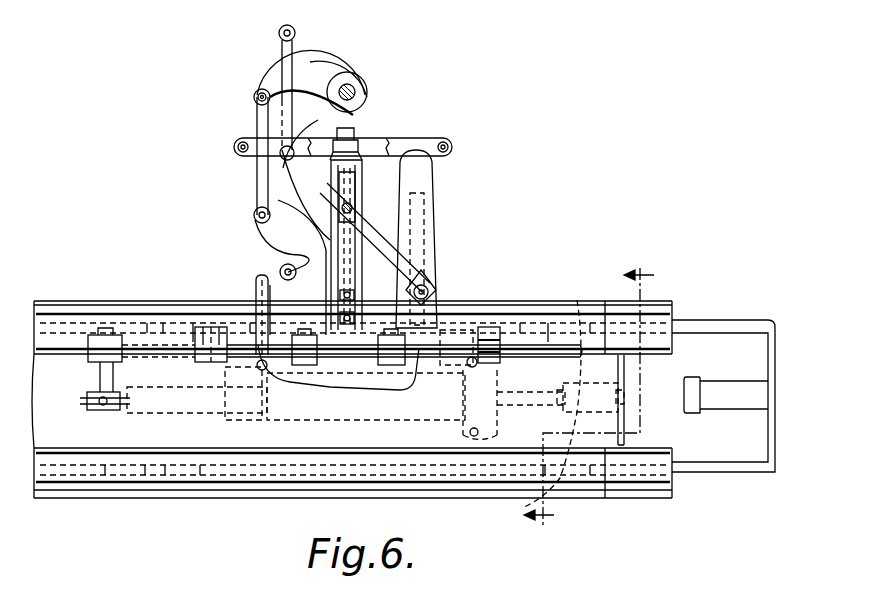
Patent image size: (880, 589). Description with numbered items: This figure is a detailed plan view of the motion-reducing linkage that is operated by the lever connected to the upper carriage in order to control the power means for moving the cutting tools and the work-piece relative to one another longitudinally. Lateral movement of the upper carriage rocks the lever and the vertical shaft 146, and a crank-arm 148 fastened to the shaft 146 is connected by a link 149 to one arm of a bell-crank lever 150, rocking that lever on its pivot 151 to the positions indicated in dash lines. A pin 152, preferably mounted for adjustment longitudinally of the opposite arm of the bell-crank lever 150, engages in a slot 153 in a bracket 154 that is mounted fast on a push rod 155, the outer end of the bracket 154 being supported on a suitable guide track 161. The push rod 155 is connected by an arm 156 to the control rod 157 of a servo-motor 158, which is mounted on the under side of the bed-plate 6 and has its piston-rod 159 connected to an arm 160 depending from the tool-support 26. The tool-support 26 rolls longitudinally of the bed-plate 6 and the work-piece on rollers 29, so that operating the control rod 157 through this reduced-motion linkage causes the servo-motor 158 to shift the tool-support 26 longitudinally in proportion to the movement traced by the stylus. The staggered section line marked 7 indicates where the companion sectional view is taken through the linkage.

The bed-plate 6 is at (710, 335).
The section line 7- 7 is at (589, 395).
The tool-support 26 is at (546, 322).
The rollers 29 is at (135, 328).
The vertical shaft 146 is at (360, 101).
The crank-arm 148 is at (313, 93).
The link 149 is at (258, 188).
The bell-crank lever 150 is at (287, 255).
The pivot 151 is at (336, 200).
The pin 152 is at (420, 278).
The slot 153 is at (425, 215).
The bracket 154 is at (433, 297).
The push rod 155 is at (357, 376).
The arm 156 is at (95, 377).
The control rod 157 is at (106, 416).
The servo-motor 158 is at (383, 423).
The piston-rod 159 is at (552, 401).
The arm 160 is at (612, 426).
The guide track 161 is at (446, 118).